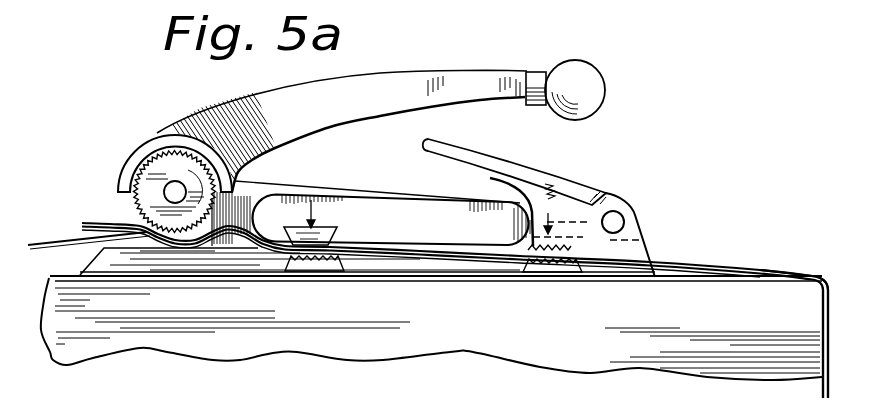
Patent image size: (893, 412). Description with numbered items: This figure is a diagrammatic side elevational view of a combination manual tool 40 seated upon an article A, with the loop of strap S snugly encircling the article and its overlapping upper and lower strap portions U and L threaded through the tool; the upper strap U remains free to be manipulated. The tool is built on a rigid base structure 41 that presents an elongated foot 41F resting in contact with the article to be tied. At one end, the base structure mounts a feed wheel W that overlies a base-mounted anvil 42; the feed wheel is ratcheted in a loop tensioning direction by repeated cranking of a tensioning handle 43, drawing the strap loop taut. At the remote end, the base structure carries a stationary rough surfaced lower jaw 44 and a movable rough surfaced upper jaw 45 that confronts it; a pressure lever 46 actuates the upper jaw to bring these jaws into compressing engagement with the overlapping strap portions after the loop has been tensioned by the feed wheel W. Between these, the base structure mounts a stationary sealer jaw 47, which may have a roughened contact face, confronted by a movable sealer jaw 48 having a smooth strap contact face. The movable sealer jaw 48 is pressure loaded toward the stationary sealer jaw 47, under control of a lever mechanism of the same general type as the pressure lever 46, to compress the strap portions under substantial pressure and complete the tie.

The combination manual tool 40 is at (146, 133).
The rigid base structure 41 is at (640, 242).
The elongated foot 41F is at (485, 278).
The anvil 42 is at (150, 238).
The tensioning handle 43 is at (364, 87).
The stationary rough surfaced lower jaw 44 is at (553, 268).
The movable rough surfaced upper jaw 45 is at (493, 179).
The pressure lever 46 is at (527, 166).
The stationary sealer jaw 47 is at (313, 268).
The movable sealer jaw 48 is at (293, 231).
The feed wheel W is at (140, 213).
The upper strap portion U is at (370, 249).
The lower strap portion L is at (405, 257).
The strap S is at (773, 270).
The article A is at (446, 347).